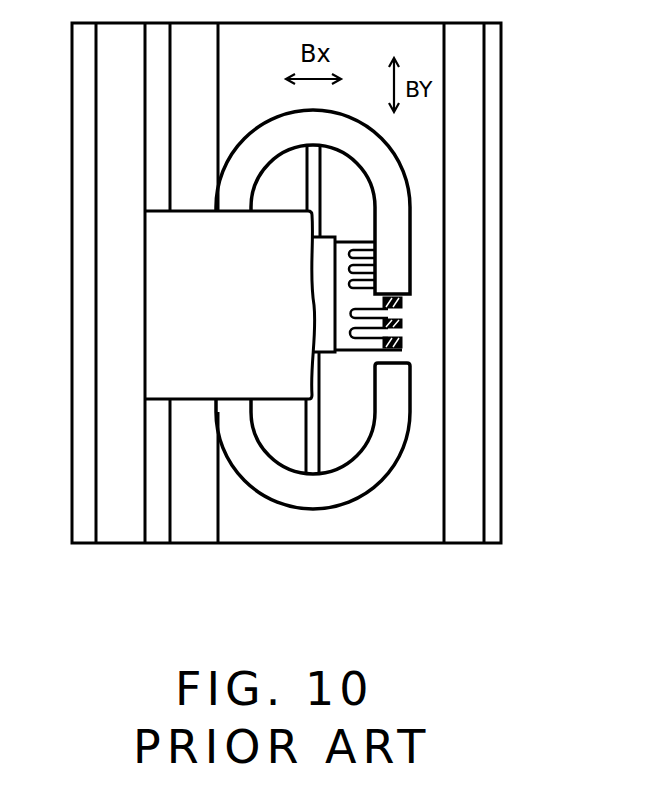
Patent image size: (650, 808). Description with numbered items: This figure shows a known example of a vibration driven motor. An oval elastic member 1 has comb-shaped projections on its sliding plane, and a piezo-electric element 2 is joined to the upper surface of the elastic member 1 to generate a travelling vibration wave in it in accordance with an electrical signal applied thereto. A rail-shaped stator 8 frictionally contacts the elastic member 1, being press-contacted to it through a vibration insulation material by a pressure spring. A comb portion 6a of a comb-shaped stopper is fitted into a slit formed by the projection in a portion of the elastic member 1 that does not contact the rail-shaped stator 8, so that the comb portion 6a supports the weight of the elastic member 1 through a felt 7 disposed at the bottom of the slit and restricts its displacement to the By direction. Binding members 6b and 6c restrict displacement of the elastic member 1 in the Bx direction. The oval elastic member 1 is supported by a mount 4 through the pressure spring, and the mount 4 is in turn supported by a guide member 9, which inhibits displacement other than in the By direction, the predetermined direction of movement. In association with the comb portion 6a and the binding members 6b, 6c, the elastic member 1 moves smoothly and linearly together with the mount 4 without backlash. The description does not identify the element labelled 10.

The oval elastic member 1 is at (410, 238).
The piezo-electric element 2 is at (397, 273).
The mount 4 is at (157, 303).
The comb portion 6a is at (372, 342).
The binding member 6b is at (312, 438).
The binding member 6c is at (315, 172).
The felt 7 is at (397, 323).
The rail-shaped stator 8 is at (193, 532).
The guide member 9 is at (465, 405).
The frame 10 is at (493, 452).